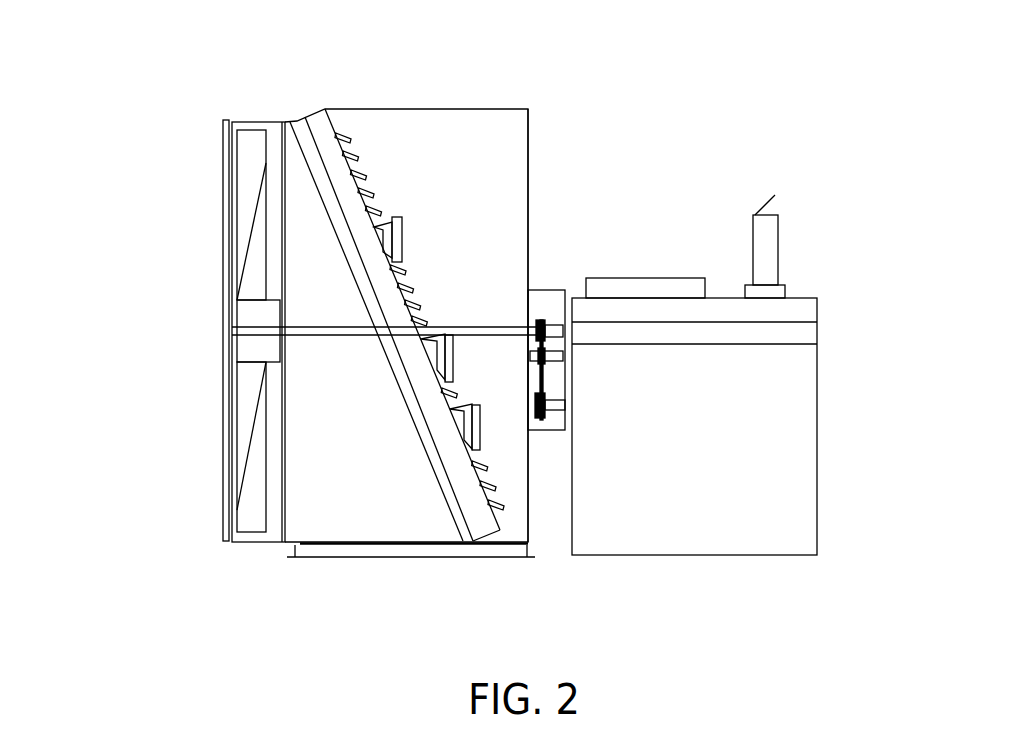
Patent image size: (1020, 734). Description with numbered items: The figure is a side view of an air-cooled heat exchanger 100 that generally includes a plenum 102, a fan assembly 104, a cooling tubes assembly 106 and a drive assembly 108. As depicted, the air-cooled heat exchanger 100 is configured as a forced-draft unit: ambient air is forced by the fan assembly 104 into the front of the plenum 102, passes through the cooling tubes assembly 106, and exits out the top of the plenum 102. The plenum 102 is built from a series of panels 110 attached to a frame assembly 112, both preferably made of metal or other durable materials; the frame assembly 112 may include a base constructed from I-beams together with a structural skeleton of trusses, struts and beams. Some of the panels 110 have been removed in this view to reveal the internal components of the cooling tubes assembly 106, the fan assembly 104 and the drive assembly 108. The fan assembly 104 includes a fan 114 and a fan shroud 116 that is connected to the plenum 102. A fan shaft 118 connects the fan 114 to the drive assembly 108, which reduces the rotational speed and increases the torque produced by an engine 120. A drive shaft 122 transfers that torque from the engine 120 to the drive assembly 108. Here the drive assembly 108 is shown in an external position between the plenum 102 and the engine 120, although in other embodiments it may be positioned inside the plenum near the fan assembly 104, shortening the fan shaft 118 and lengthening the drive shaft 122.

The air-cooled heat exchanger 100 is at (640, 95).
The plenum 102 is at (452, 109).
The fan assembly 104 is at (186, 205).
The cooling tubes assembly 106 is at (342, 168).
The drive assembly 108 is at (548, 272).
The panels 110 is at (528, 168).
The frame assembly 112 is at (352, 556).
The fan 114 is at (248, 278).
The fan shroud 116 is at (260, 123).
The fan shaft 118 is at (332, 333).
The engine 120 is at (780, 428).
The drive shaft 122 is at (554, 410).